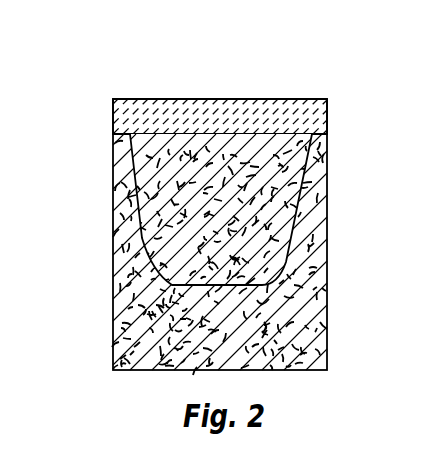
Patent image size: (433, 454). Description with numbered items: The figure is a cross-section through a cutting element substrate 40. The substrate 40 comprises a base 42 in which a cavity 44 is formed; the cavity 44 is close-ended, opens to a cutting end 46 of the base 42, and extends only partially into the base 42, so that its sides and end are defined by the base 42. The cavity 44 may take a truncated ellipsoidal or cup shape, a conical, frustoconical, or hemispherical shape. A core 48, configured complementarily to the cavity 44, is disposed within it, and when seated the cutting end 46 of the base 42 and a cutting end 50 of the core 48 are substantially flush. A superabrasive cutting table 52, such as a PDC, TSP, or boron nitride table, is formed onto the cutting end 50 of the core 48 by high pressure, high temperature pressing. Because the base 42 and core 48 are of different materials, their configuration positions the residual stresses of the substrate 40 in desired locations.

The substrate 40 is at (82, 83).
The base 42 is at (313, 288).
The cavity 44 is at (300, 257).
The cutting end 46 is at (315, 128).
The core 48 is at (274, 175).
The cutting end of core 50 is at (257, 140).
The superabrasive cutting table 52 is at (289, 106).